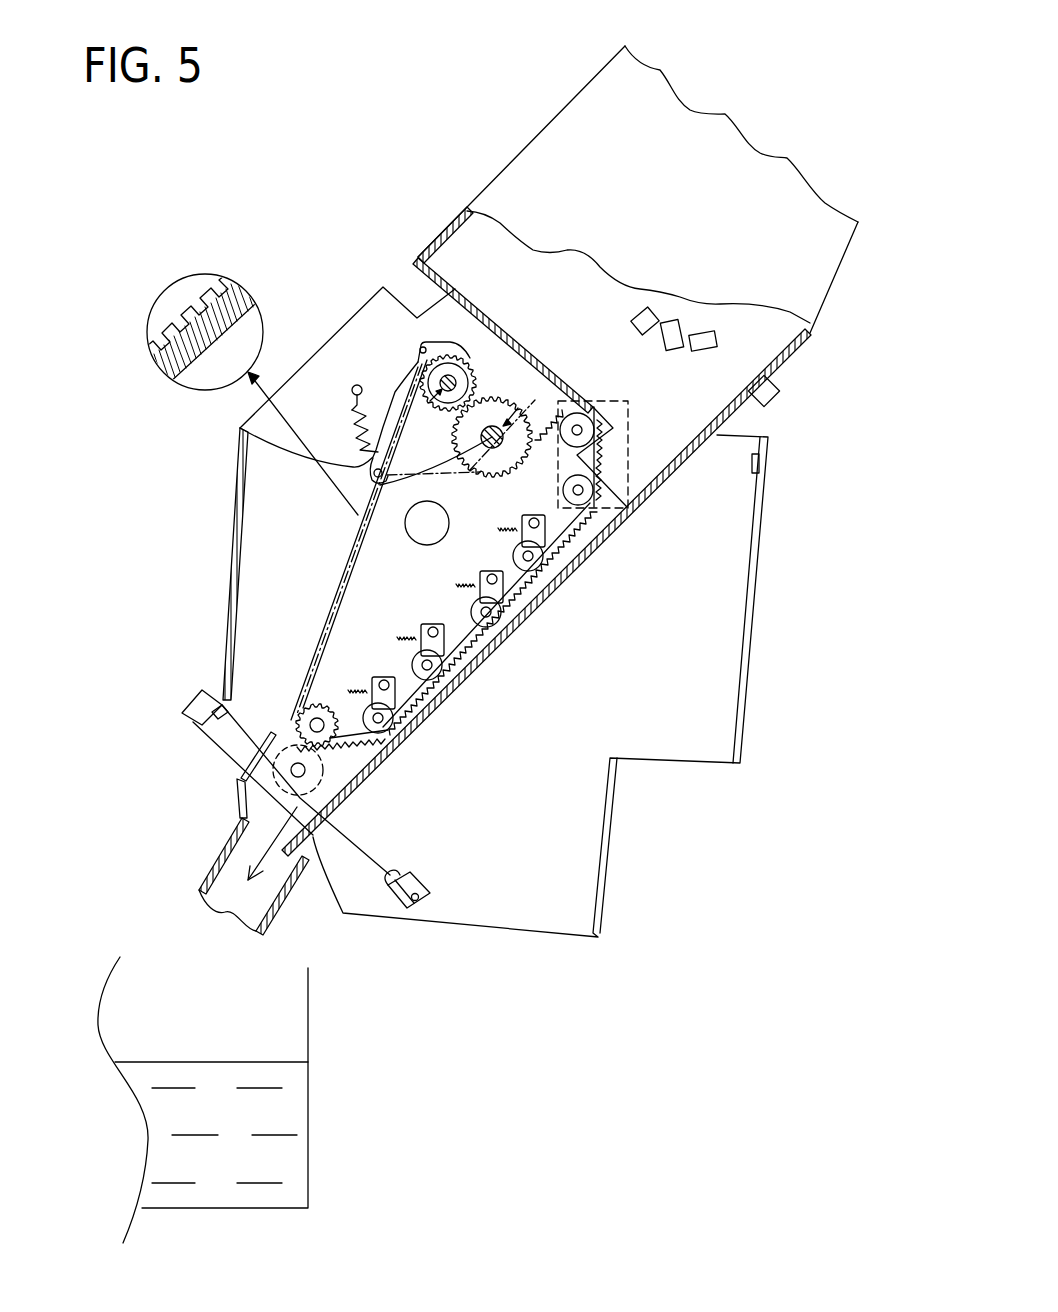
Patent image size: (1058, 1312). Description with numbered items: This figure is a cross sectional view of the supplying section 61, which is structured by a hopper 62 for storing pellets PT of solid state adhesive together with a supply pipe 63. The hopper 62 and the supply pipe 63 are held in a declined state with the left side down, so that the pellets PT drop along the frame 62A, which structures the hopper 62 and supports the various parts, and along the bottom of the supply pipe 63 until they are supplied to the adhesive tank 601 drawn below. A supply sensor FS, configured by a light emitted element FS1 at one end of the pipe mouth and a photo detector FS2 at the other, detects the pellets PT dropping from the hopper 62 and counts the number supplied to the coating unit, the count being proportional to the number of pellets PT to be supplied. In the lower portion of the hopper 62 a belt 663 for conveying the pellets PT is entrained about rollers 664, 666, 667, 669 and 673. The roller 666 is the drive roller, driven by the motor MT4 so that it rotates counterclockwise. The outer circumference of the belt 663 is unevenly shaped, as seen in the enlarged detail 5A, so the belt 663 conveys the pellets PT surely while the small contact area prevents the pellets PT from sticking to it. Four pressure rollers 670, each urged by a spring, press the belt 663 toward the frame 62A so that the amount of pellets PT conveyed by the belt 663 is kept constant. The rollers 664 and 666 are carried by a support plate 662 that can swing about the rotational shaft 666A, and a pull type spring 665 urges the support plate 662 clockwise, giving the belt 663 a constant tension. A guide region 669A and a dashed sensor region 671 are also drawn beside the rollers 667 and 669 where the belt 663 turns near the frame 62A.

The hopper 62 is at (565, 100).
The frame 62A is at (612, 530).
The supply section 61 is at (858, 301).
The pellets PT is at (670, 312).
The detail view of rack teeth 5A is at (205, 272).
The roller 664 is at (466, 352).
The support plate 662 is at (512, 385).
The drive roller 666 is at (495, 430).
The roller 667 is at (595, 407).
The roller 669 is at (563, 492).
The guide wedge 669A is at (628, 509).
The sensor region 671 is at (628, 421).
The pull type spring 665 is at (355, 407).
The rotational shaft 666A is at (357, 513).
The belt 663 is at (337, 600).
The motor MT4 is at (405, 545).
The pressure rollers 670 is at (463, 682).
The roller 673 is at (303, 702).
The light emitted element FS1 is at (190, 693).
The photo detector FS2 is at (433, 857).
The supply sensor FS is at (456, 810).
The supply pipe 63 is at (213, 864).
The adhesive tank 601 is at (308, 1087).